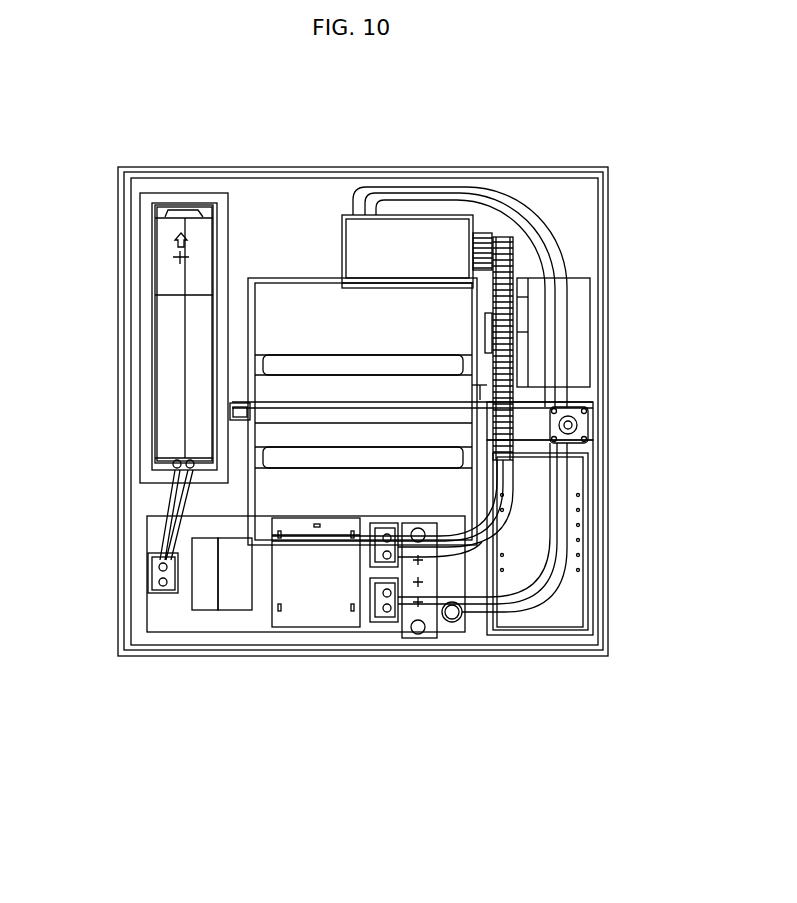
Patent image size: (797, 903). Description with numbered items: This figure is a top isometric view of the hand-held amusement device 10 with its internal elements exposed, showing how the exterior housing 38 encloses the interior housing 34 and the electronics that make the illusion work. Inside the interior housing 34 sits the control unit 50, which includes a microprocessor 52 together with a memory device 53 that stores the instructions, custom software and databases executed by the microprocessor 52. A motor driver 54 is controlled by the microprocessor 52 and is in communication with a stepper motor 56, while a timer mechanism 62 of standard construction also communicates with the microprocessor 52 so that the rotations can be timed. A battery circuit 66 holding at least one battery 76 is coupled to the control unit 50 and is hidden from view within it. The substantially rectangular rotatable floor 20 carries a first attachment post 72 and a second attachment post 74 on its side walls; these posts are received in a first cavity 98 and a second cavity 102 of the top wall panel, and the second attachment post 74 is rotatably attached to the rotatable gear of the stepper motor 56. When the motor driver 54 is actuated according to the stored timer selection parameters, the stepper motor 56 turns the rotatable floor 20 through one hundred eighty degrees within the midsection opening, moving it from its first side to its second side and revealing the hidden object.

The device 10 is at (367, 416).
The rotatable floor 20 is at (290, 388).
The interior housing 34 is at (568, 215).
The exterior housing 38 is at (608, 273).
The control unit 50 is at (241, 627).
The microprocessor 52 is at (205, 582).
The memory device 53 is at (237, 592).
The motor driver 54 is at (323, 605).
The stepper motor 56 is at (388, 247).
The timer mechanism 62 is at (585, 423).
The battery circuit 66 is at (152, 557).
The first attachment post 72 is at (233, 405).
The second attachment post 74 is at (533, 410).
The battery 76 is at (180, 210).
The first cavity 98 is at (228, 413).
The second cavity 102 is at (480, 393).